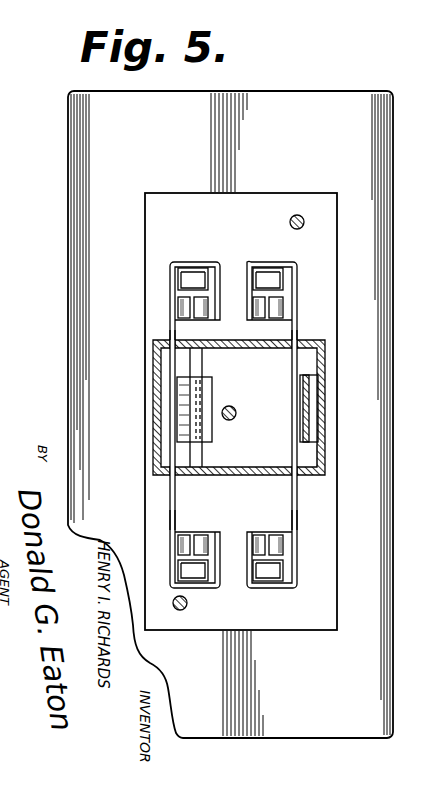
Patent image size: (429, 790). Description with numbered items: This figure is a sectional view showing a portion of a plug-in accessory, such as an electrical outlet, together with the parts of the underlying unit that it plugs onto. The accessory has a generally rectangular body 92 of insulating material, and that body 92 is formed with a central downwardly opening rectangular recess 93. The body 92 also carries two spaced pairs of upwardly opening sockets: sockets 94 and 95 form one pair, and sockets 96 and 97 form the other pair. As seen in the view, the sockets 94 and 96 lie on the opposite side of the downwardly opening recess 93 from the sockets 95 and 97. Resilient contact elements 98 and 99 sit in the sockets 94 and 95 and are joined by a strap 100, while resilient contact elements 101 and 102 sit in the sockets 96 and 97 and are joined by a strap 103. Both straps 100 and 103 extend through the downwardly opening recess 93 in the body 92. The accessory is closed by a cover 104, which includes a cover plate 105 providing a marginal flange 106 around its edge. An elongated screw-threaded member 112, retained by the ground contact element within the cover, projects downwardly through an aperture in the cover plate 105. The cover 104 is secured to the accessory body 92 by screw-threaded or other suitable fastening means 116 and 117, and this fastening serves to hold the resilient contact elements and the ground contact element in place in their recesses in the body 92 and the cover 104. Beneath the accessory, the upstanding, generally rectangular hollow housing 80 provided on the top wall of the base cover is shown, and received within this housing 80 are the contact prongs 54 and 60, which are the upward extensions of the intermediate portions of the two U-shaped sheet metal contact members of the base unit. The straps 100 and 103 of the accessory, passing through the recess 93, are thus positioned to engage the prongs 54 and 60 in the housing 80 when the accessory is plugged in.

The contact prong 54 is at (304, 392).
The contact prong 60 is at (212, 392).
The housing 80 is at (327, 455).
The body 92 is at (341, 624).
The downwardly opening rectangular recess 93 is at (157, 402).
The socket 94 is at (170, 283).
The socket 95 is at (170, 566).
The socket 96 is at (292, 285).
The socket 97 is at (297, 557).
The resilient contact element 98 is at (210, 278).
The resilient contact element 99 is at (212, 570).
The strap 100 is at (170, 497).
The resilient contact element 101 is at (281, 273).
The resilient contact element 102 is at (286, 574).
The strap 103 is at (297, 497).
The cover 104 is at (276, 742).
The cover plate 105 is at (393, 358).
The marginal flange 106 is at (68, 356).
The screw-threaded member 112 is at (237, 413).
The fastening means 116 is at (297, 214).
The fastening means 117 is at (181, 611).